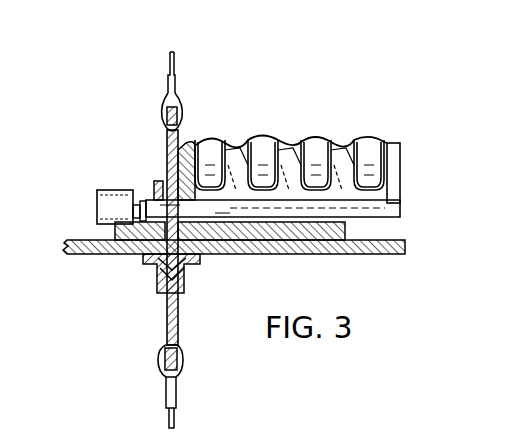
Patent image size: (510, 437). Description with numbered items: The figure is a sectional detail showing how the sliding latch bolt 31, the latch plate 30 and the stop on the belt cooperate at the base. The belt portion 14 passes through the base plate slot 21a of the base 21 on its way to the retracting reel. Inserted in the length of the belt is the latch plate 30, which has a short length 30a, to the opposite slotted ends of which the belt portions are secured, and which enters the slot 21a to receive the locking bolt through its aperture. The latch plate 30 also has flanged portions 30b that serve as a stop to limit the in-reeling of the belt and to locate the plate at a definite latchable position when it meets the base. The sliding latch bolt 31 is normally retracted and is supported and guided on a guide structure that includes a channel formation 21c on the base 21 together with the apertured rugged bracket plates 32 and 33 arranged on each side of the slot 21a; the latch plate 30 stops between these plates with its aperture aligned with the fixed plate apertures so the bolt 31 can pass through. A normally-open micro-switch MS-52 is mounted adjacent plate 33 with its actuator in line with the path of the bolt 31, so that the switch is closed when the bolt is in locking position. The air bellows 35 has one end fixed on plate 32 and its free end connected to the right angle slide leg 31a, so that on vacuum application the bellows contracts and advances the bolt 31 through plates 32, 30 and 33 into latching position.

The latch plate 30 is at (186, 134).
The apertured bracket plate 32 is at (204, 140).
The air bellows 35 is at (305, 142).
The channel formation 21c is at (367, 139).
The right angle slide leg 31a is at (391, 170).
The sliding latch bolt 31 is at (376, 218).
The apertured bracket plate 33 is at (154, 188).
The micro-switch MS-52 is at (96, 213).
The base 21 is at (75, 239).
The base plate slot 21a is at (157, 270).
The short length of latch plate 30a is at (185, 262).
The flanged portions 30b is at (186, 276).
The belt portion 14 is at (183, 370).